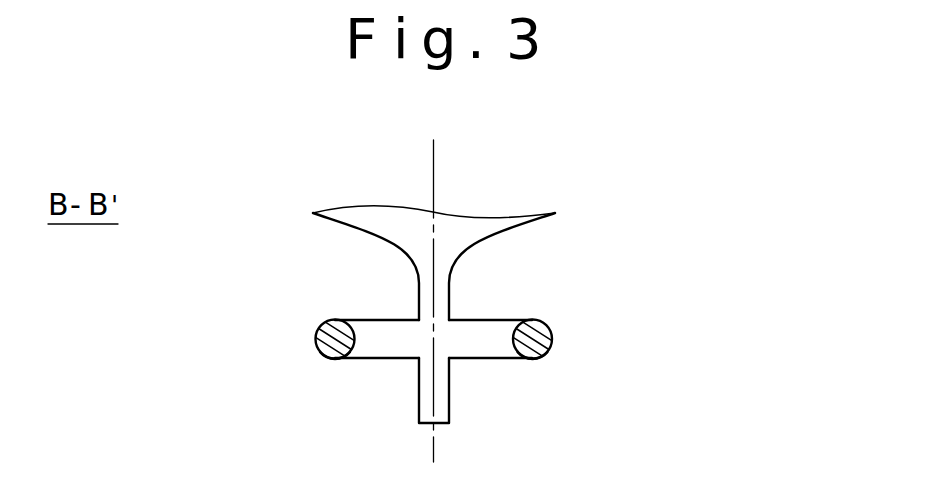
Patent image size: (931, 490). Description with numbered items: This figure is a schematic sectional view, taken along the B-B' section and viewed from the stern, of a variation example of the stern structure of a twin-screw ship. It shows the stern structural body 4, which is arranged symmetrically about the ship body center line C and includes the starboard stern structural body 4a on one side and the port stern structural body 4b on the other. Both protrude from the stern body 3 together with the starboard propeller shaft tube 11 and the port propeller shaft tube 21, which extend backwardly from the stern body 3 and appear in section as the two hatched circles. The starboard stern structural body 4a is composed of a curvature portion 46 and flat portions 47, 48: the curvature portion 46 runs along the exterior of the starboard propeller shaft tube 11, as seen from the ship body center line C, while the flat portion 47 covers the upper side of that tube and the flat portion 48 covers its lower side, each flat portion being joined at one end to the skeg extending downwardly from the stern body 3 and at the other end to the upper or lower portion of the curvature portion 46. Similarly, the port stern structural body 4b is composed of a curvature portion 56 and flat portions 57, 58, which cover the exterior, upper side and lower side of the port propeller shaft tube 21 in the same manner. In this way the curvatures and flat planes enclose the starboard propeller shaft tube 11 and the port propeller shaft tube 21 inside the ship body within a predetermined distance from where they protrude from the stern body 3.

The stern body 3 is at (475, 220).
The stern structural body 4 is at (678, 395).
The starboard stern structural body 4a is at (582, 297).
The port stern structural body 4b is at (285, 298).
The flat portion 47 is at (475, 320).
The flat portion 57 is at (392, 320).
The curvature portion 46 is at (553, 341).
The curvature portion 56 is at (315, 340).
The flat portion 48 is at (475, 358).
The flat portion 58 is at (392, 358).
The starboard propeller shaft tube 11 is at (534, 358).
The port propeller shaft tube 21 is at (333, 358).
The ship body center line C is at (433, 170).